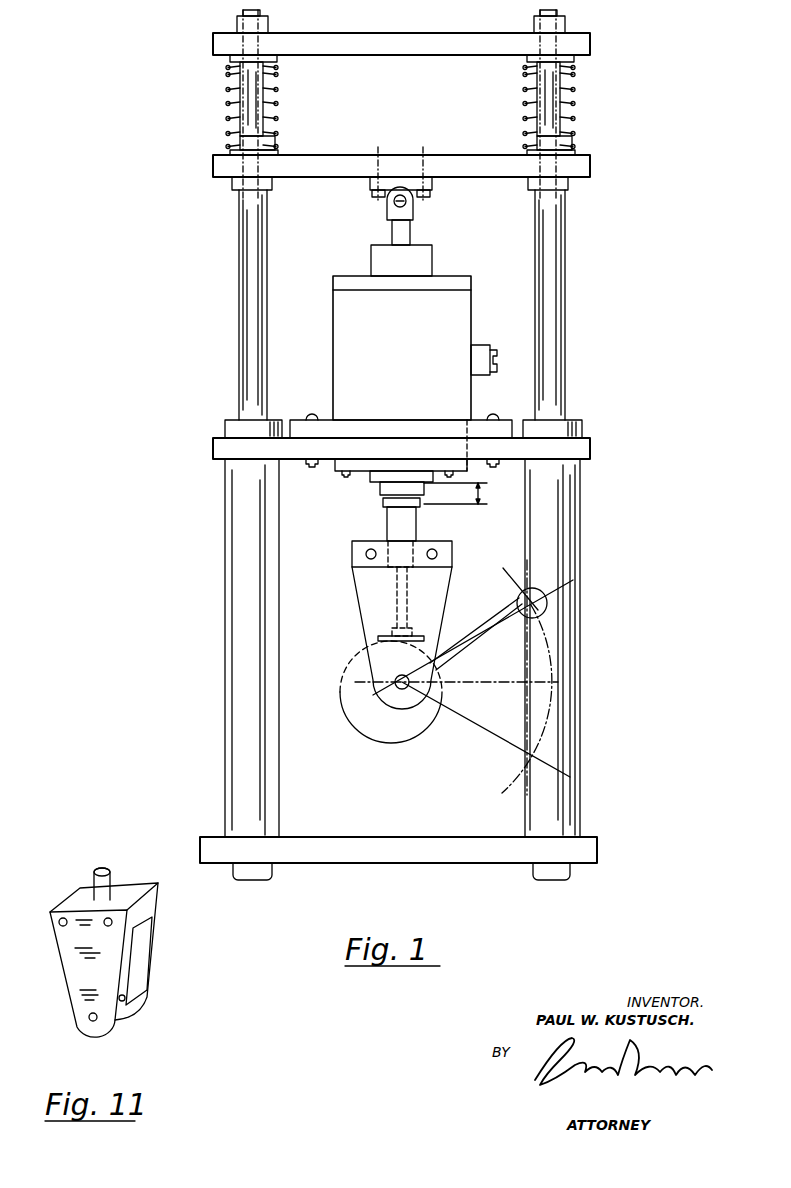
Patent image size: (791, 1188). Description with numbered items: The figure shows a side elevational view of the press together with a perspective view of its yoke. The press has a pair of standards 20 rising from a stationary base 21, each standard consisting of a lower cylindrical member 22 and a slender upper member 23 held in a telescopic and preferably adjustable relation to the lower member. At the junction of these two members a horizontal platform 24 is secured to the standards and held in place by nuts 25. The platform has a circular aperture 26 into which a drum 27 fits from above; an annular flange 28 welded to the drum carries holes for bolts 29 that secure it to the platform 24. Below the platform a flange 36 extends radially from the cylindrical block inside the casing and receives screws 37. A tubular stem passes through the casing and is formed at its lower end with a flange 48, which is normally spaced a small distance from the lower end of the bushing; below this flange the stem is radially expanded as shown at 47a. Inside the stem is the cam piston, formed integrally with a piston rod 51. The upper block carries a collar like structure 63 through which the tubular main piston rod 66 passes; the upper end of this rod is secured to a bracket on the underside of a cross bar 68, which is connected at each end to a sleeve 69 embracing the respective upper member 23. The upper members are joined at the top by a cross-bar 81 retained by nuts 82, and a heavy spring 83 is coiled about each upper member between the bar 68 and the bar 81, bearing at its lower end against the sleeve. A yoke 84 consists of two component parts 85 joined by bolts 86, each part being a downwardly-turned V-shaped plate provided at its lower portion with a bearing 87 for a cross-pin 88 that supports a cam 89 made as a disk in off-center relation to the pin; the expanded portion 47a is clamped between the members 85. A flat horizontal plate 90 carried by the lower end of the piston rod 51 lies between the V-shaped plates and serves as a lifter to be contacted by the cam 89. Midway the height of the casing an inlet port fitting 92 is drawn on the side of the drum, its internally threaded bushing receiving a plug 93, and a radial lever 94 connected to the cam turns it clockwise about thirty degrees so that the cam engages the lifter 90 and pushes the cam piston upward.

In FIG. 1, the standards 20 is at (205, 595).
In FIG. 1, the stationary base 21 is at (492, 857).
In FIG. 1, the lower cylindrical member 22 is at (275, 625).
In FIG. 1, the upper member 23 is at (258, 315).
In FIG. 1, the horizontal platform 24 is at (415, 448).
In FIG. 1, the nuts 25 is at (280, 420).
In FIG. 1, the circular aperture 26 is at (337, 442).
In FIG. 1, the drum 27 is at (480, 300).
In FIG. 1, the annular flange 28 is at (505, 430).
In FIG. 1, the bolts 29 is at (494, 415).
In FIG. 1, the flange 36 is at (360, 430).
In FIG. 1, the screws 37 is at (475, 480).
In FIG. 1, the radially expanded portion of the stem 47a is at (408, 532).
In FIG. 11, the radially expanded portion of the stem 47a is at (110, 882).
In FIG. 1, the flange 48 is at (380, 505).
In FIG. 1, the piston rod 51 is at (395, 592).
In FIG. 1, the collar like structure 63 is at (425, 268).
In FIG. 1, the main piston rod 66 is at (411, 232).
In FIG. 1, the cross bar 68 is at (445, 168).
In FIG. 1, the sleeve 69 is at (240, 183).
In FIG. 1, the cross-bar 81 is at (366, 50).
In FIG. 1, the nuts 82 is at (265, 24).
In FIG. 1, the heavy spring 83 is at (278, 100).
In FIG. 1, the yoke 84 is at (458, 598).
In FIG. 11, the yoke 84 is at (170, 958).
In FIG. 1, the component parts 85 is at (372, 608).
In FIG. 11, the component parts 85 is at (145, 937).
In FIG. 1, the bolts 86 is at (440, 554).
In FIG. 11, the bolts 86 is at (62, 927).
In FIG. 11, the bearing 87 is at (126, 1000).
In FIG. 1, the cross-pin 88 is at (360, 735).
In FIG. 1, the cam 89 is at (395, 745).
In FIG. 1, the plate 90 is at (425, 636).
In FIG. 1, the switch box 92 is at (484, 346).
In FIG. 1, the plug 93 is at (496, 364).
In FIG. 1, the radial lever 94 is at (482, 648).